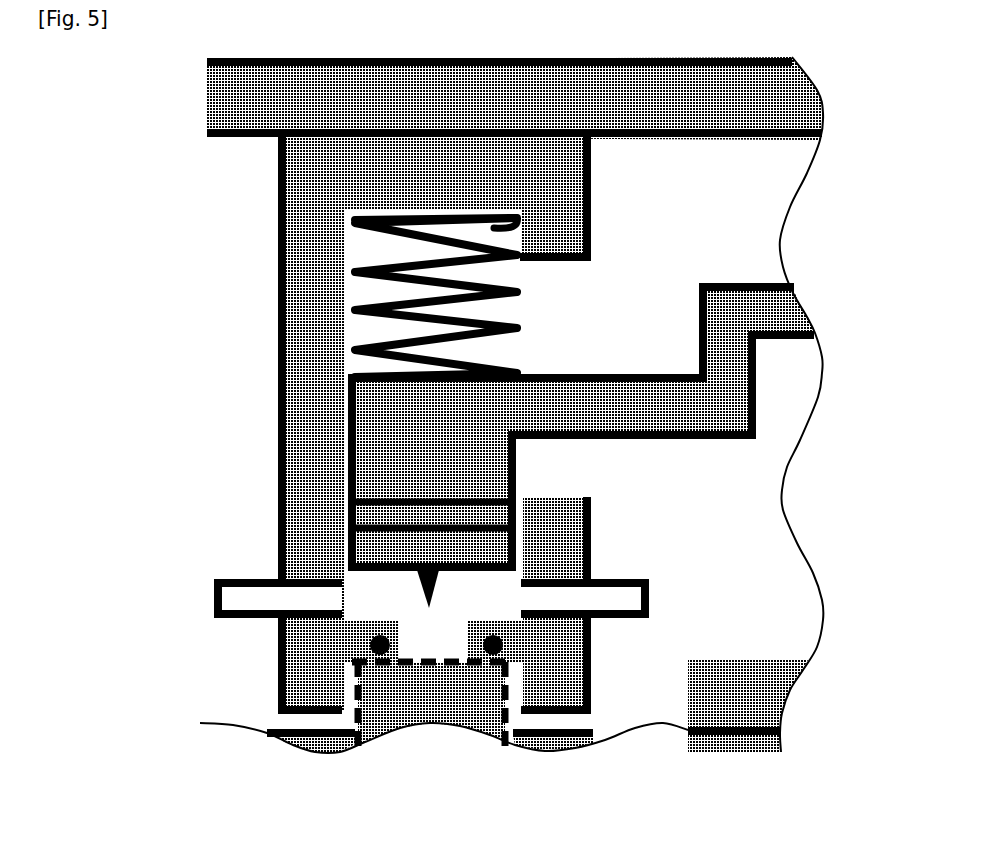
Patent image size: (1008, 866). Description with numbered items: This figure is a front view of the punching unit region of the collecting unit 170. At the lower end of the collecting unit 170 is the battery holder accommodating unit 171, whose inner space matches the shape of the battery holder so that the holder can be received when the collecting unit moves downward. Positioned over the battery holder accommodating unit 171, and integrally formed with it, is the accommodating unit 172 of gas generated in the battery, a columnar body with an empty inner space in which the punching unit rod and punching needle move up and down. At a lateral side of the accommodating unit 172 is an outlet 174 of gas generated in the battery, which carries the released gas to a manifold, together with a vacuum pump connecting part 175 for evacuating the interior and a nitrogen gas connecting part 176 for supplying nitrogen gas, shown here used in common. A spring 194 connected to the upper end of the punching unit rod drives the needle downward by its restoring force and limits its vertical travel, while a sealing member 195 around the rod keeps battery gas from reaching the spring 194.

The collecting unit 170 is at (282, 383).
The battery holder accommodating unit 171 is at (347, 668).
The accommodating unit of gas generated in the battery 172 is at (378, 623).
The outlet of gas generated in the battery 174 is at (218, 588).
The vacuum pump connecting part 175 is at (650, 600).
The nitrogen gas connecting part 176 is at (650, 597).
The spring 194 is at (373, 280).
The sealing member 195 is at (348, 531).